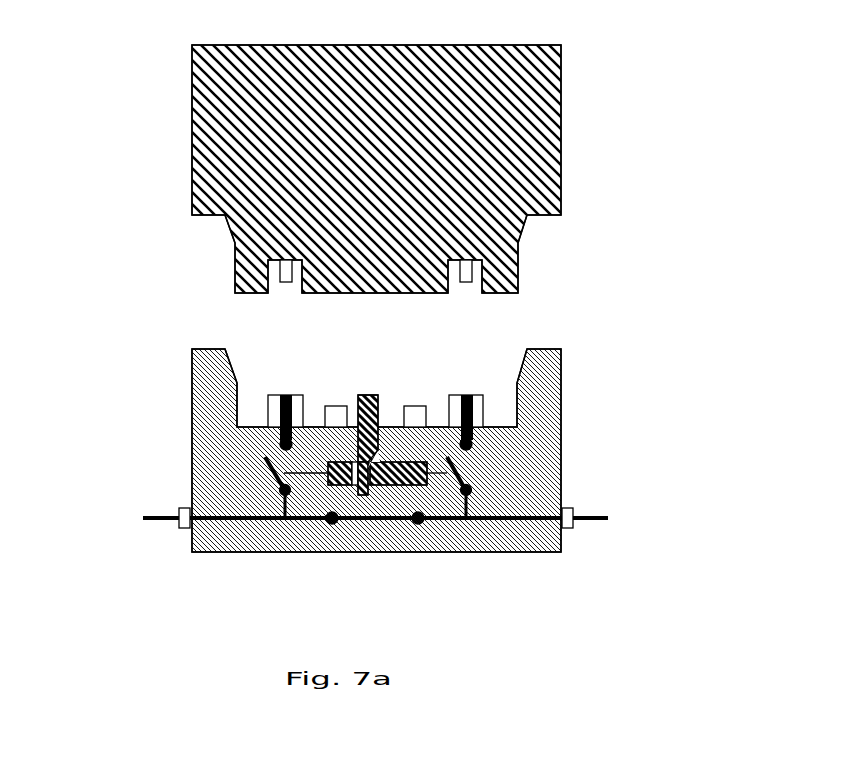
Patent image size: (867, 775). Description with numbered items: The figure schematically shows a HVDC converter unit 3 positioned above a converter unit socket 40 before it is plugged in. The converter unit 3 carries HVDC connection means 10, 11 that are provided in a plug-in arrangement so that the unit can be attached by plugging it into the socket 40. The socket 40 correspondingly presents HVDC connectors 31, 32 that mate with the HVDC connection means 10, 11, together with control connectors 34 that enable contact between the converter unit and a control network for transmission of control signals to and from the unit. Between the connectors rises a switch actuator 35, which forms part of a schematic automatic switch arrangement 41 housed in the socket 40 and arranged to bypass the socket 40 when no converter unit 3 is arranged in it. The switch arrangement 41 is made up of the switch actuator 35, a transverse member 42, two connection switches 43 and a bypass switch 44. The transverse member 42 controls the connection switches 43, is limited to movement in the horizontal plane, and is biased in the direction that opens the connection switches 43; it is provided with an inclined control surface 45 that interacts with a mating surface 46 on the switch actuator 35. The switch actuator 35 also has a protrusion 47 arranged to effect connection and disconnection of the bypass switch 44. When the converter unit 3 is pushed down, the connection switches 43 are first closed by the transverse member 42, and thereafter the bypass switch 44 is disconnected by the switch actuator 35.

The HVDC converter unit 3 is at (192, 158).
The HVDC connection means 10 is at (287, 282).
The HVDC connection means 11 is at (465, 282).
The converter unit socket 40 is at (326, 498).
The automatic switch arrangement 41 is at (462, 538).
The HVDC connector 31 is at (285, 395).
The HVDC connector 32 is at (467, 395).
The control connector 34 is at (333, 406).
The switch actuator 35 is at (368, 395).
The transverse member 42 is at (334, 485).
The connection switch 43 is at (265, 461).
The bypass switch 44 is at (356, 486).
The inclined control surface 45 is at (378, 455).
The mating surface 46 is at (382, 486).
The protrusion 47 is at (367, 496).